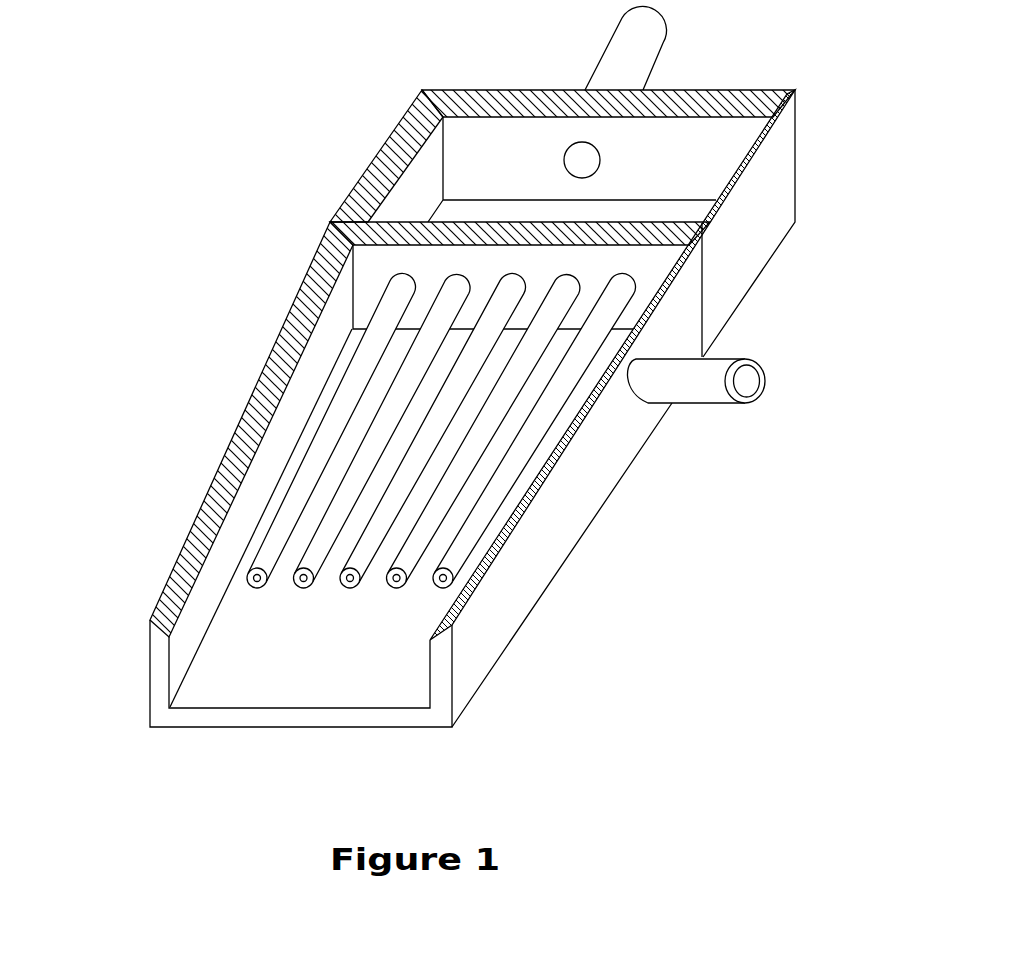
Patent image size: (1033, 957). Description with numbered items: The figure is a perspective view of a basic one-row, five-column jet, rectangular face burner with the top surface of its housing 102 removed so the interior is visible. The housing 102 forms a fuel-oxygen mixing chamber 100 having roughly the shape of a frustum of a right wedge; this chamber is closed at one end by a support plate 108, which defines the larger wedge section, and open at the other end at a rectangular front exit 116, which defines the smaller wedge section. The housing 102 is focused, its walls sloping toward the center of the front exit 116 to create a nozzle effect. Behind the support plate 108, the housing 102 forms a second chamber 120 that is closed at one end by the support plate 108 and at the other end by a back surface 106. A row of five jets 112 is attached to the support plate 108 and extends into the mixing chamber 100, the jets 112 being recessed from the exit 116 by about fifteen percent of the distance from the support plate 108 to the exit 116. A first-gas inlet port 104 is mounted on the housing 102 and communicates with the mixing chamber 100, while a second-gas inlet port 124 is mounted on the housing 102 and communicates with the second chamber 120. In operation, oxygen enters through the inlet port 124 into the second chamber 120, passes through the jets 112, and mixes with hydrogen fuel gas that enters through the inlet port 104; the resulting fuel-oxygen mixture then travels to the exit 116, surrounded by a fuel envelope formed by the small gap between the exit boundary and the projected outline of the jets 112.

The fuel-oxygen mixing chamber 100 is at (355, 662).
The housing 102 is at (358, 170).
The first-gas inlet port 104 is at (718, 358).
The back surface 106 is at (472, 90).
The support plate 108 is at (632, 222).
The jets 112 is at (350, 588).
The front exit 116 is at (150, 673).
The second chamber 120 is at (487, 160).
The second-gas inlet port 124 is at (600, 162).